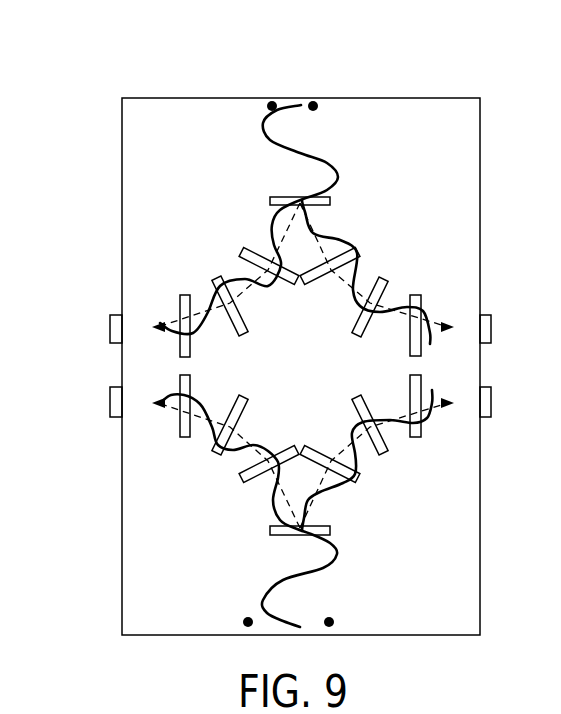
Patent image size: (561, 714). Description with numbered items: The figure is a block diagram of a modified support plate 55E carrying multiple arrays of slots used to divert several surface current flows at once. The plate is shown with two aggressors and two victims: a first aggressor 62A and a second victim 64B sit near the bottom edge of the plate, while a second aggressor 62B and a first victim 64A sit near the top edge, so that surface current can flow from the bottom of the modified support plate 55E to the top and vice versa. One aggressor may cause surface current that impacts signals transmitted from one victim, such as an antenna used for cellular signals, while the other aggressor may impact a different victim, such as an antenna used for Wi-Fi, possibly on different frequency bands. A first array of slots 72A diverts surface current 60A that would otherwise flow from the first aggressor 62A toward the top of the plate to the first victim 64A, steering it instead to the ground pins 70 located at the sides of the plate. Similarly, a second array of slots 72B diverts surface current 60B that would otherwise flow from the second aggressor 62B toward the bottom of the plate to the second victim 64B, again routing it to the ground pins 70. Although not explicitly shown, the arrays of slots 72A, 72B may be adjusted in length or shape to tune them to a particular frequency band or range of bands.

The modified support plate 55E is at (143, 70).
The second aggressor 62B is at (270, 103).
The first victim 64A is at (315, 101).
The surface current 60B is at (332, 161).
The second array of slots 72B is at (420, 296).
The ground pins 70 is at (110, 330).
The first array of slots 72A is at (417, 432).
The surface current 60A is at (283, 581).
The first aggressor 62A is at (247, 619).
The second victim 64B is at (330, 619).